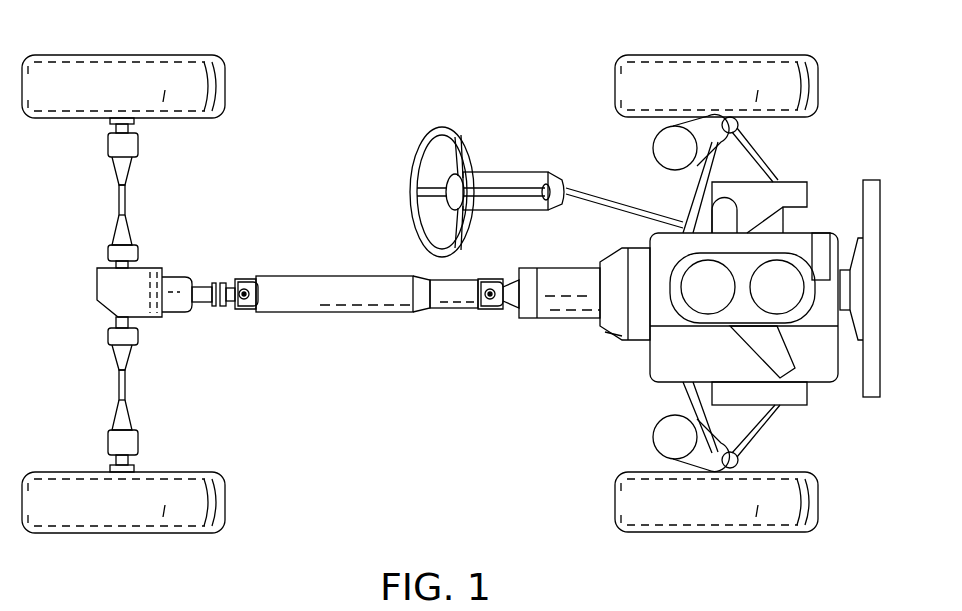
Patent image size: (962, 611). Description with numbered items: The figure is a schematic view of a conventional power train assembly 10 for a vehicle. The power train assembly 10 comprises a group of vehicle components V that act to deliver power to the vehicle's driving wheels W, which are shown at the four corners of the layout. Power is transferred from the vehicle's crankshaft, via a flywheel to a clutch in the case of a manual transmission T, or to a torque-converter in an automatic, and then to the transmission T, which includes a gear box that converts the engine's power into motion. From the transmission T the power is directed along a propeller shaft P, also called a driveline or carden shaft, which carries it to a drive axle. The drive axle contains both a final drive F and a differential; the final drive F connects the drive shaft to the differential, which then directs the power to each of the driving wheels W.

The power train assembly 10 is at (500, 61).
The driving wheels W is at (96, 82).
The final drive F is at (176, 318).
The propeller shaft P is at (307, 313).
The transmission T is at (558, 320).
The vehicle components V is at (398, 378).